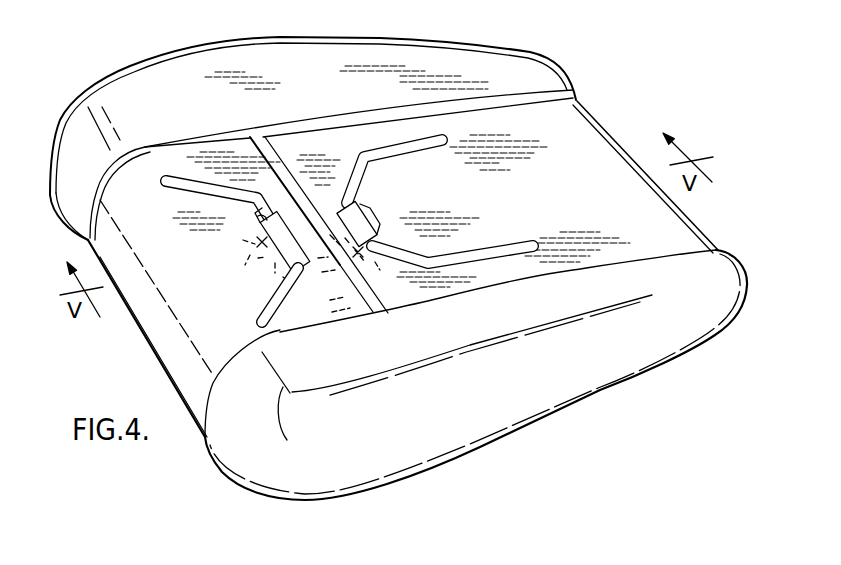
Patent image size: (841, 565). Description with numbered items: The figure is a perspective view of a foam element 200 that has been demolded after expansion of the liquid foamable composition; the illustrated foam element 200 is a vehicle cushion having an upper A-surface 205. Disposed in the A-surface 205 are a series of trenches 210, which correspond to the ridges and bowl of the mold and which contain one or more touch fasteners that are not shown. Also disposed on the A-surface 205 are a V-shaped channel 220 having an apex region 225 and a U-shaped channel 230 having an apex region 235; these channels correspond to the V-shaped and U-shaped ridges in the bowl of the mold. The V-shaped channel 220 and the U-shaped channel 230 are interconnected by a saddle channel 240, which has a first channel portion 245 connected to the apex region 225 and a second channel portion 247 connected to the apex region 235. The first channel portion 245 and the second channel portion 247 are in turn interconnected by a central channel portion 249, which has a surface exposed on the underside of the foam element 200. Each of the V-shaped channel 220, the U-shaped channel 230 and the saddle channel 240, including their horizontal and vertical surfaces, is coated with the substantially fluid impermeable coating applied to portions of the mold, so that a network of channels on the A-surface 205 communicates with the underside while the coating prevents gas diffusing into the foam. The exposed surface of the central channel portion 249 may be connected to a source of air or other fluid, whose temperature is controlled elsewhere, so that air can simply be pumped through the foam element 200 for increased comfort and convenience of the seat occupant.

The foam element 200 is at (58, 108).
The A-surface 205 is at (603, 153).
The trenches 210 is at (173, 140).
The V-shaped channel 220 is at (530, 243).
The apex region 225 is at (367, 222).
The U-shaped channel 230 is at (257, 317).
The apex region 235 is at (262, 241).
The saddle channel 240 is at (342, 293).
The first channel portion 245 is at (360, 252).
The second channel portion 247 is at (257, 270).
The central channel portion 249 is at (332, 275).